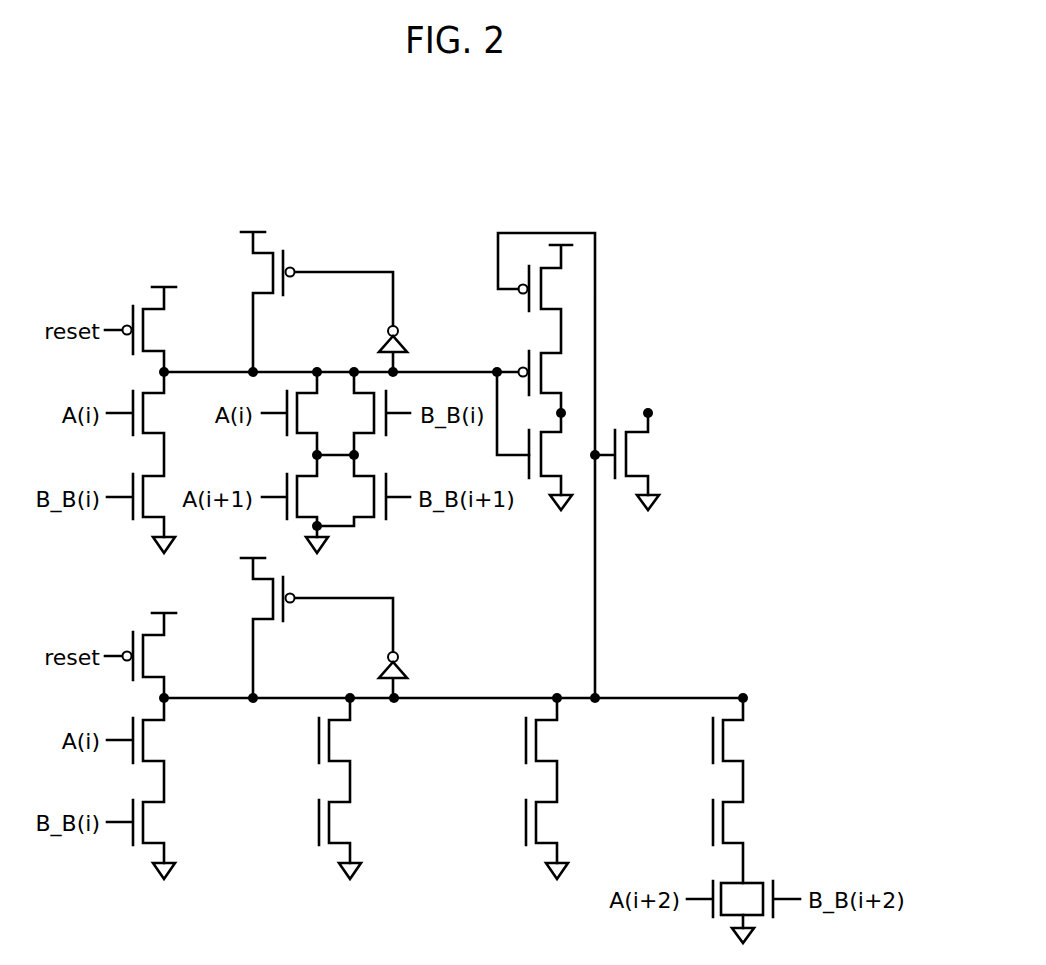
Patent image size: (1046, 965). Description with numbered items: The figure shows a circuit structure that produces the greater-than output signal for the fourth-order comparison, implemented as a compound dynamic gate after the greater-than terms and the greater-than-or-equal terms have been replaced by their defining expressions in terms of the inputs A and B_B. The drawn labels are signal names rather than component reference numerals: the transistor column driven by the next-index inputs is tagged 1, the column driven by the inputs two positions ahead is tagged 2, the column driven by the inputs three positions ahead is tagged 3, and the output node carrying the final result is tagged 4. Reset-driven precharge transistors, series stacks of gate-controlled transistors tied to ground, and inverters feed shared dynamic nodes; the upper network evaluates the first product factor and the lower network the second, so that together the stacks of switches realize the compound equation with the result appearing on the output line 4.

The A(i+1)/B_B(i+1) transistor column 1 is at (319, 822).
The A(i+2)/B_B(i+2) transistor column 2 is at (526, 822).
The A(i+3)/B_B(i+3) transistor column 3 is at (713, 822).
The G4(i) output node and transistor 4 is at (561, 413).